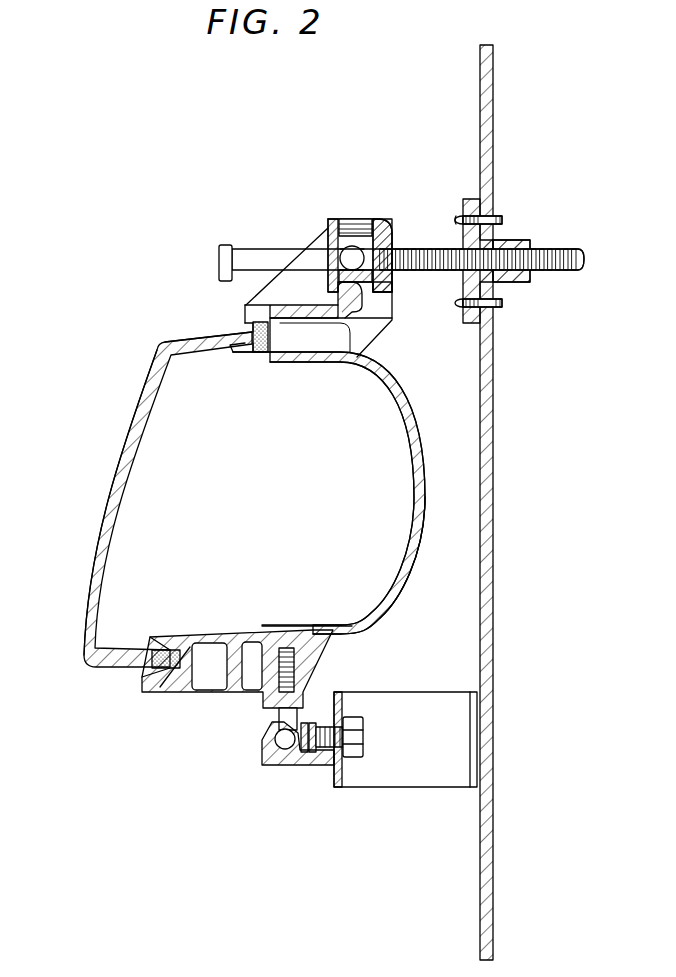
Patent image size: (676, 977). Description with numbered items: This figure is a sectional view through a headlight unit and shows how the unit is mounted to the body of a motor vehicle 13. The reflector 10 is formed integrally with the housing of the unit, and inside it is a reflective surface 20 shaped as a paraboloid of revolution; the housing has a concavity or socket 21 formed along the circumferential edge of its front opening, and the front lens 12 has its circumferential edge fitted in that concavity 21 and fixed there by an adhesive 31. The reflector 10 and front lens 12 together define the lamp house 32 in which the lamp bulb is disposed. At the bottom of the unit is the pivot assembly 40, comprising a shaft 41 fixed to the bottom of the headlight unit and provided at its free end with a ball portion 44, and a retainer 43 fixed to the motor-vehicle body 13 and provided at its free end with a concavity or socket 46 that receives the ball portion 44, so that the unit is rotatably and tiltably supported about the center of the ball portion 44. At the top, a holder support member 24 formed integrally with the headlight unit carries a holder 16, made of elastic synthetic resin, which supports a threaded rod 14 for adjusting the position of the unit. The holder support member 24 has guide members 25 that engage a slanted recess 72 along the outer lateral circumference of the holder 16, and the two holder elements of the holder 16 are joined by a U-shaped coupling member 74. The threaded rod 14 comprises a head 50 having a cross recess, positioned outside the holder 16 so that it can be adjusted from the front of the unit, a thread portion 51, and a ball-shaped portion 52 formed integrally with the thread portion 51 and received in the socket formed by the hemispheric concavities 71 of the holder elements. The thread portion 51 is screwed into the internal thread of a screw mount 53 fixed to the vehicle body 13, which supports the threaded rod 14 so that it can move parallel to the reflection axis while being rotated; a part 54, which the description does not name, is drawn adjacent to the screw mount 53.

The reflector 10 is at (432, 441).
The front lens 12 is at (133, 409).
The body of the motor vehicle 13 is at (508, 724).
The threaded rod 14 is at (258, 258).
The holder 16 is at (384, 228).
The reflective surface 20 is at (417, 494).
The concavity or socket 21 is at (247, 322).
The holder support member 24 is at (357, 317).
The guide member 25 is at (363, 300).
The adhesive 31 is at (215, 340).
The lamp house 32 is at (130, 512).
The pivot assembly 40 is at (276, 784).
The shaft 41 is at (280, 716).
The retainer 43 is at (320, 766).
The ball portion 44 is at (265, 742).
The concavity or socket 46 is at (292, 748).
The head 50 is at (226, 262).
The thread portion 51 is at (553, 256).
The ball-shaped portion 52 is at (355, 243).
The screw mount 53 is at (466, 205).
The bracket boss 54 is at (512, 250).
The hemispheric concavity 71 is at (344, 243).
The slanted recess 72 is at (332, 292).
The U-shaped coupling member 74 is at (394, 290).